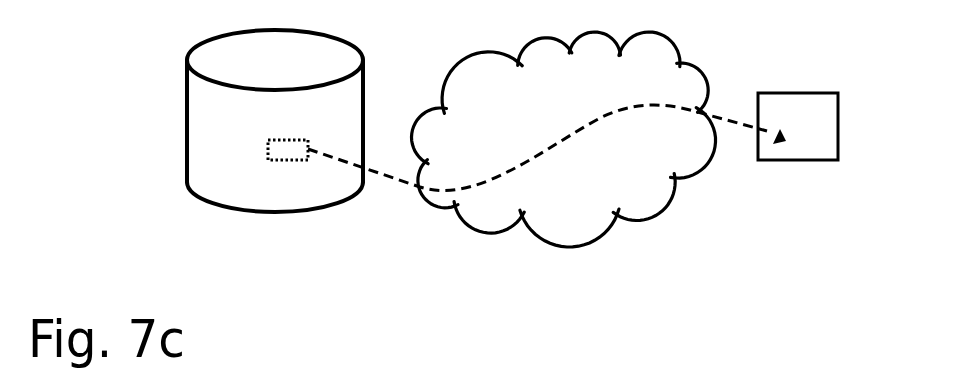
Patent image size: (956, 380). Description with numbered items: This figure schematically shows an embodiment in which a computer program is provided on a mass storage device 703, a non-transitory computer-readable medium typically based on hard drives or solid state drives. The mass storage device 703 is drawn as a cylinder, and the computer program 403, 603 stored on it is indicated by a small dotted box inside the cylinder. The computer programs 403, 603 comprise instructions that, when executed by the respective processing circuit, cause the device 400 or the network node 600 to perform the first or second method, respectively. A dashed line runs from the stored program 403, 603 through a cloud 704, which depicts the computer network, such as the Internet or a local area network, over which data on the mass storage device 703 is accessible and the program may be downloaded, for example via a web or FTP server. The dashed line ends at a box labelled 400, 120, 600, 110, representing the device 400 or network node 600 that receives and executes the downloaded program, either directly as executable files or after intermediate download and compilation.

The mass storage device 703 is at (187, 120).
The computer program 403 is at (276, 201).
The computer program 603 is at (275, 160).
The communication network (cloud) 704 is at (482, 230).
The device 400 is at (796, 174).
The user device 120 is at (796, 174).
The network node 600 is at (796, 174).
The user device 110 is at (777, 160).